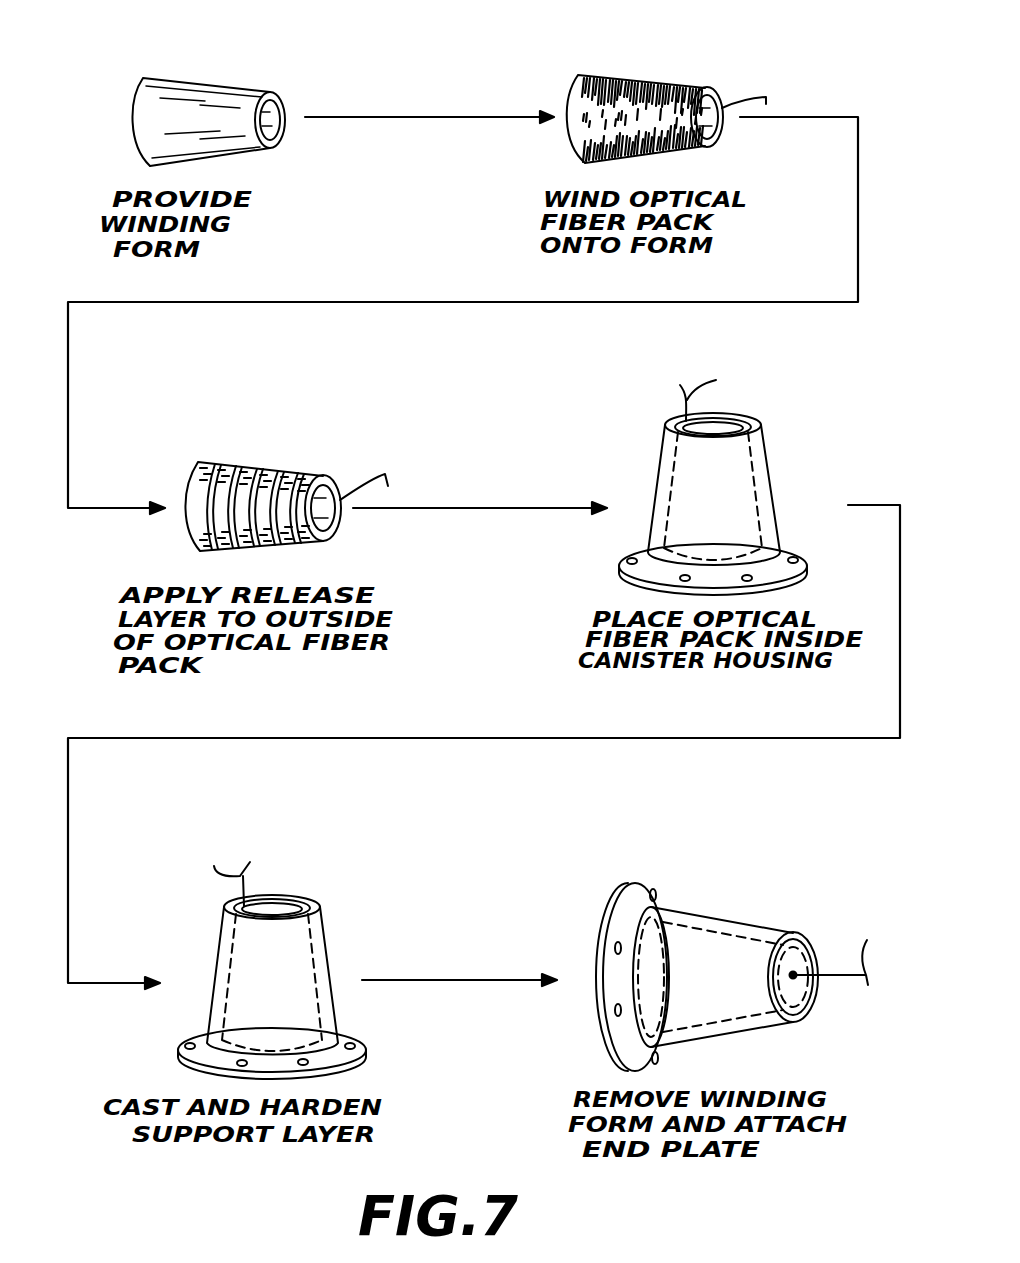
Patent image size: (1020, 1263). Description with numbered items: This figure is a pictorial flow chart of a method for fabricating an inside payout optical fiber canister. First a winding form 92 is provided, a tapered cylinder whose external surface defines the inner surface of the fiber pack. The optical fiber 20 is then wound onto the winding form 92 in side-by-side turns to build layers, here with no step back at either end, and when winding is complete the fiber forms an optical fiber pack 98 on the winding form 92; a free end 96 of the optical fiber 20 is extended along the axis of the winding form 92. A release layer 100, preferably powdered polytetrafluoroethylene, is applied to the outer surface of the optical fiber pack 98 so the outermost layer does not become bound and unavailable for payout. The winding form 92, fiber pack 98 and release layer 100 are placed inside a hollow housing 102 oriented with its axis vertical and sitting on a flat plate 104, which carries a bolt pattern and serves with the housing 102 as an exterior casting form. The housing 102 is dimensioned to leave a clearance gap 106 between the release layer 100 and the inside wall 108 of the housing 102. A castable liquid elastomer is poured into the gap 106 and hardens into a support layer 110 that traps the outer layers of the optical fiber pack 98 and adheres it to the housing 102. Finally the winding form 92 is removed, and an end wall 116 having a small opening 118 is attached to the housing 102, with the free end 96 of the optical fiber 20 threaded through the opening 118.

The optical fiber 20 is at (720, 958).
The winding form 92 is at (205, 82).
The free end 96 is at (766, 96).
The optical fiber pack 98 is at (623, 80).
The release layer 100 is at (227, 472).
The housing 102 is at (765, 456).
The flat plate 104 is at (803, 572).
The clearance gap 106 is at (672, 455).
The inside wall 108 is at (666, 488).
The support layer 110 is at (233, 936).
The end wall 116 is at (800, 1020).
The opening 118 is at (797, 981).